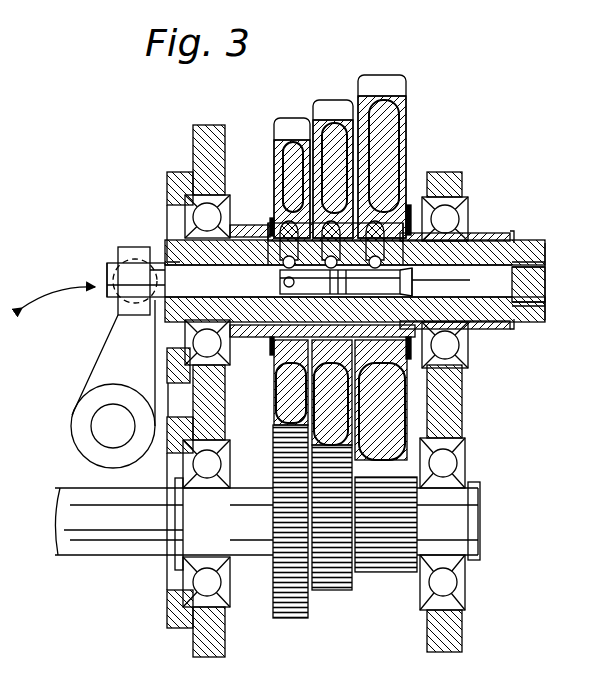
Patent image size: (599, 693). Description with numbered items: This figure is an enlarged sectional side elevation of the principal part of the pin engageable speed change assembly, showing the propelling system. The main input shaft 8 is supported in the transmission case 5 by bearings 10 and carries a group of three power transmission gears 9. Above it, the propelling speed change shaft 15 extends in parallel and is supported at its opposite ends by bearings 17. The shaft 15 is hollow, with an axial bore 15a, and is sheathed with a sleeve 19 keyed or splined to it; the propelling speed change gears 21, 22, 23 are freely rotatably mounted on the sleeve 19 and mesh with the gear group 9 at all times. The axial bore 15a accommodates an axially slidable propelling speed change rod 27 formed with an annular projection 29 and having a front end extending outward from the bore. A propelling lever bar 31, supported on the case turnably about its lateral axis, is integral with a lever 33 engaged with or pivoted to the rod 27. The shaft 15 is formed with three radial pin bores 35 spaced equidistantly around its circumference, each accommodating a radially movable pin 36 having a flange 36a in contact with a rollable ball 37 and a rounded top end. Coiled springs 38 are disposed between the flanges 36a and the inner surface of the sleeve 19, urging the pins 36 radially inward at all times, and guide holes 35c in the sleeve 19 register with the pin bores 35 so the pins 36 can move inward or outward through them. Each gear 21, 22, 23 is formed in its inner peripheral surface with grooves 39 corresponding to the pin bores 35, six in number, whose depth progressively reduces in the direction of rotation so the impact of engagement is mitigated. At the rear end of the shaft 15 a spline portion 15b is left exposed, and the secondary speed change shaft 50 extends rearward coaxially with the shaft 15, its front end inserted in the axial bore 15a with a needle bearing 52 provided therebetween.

The transmission case 5 is at (190, 640).
The main input shaft 8 is at (133, 553).
The power transmission gears 9 is at (363, 576).
The bearings 10 is at (185, 582).
The propelling speed change shaft 15 is at (488, 325).
The axial bore 15a is at (158, 262).
The spline portion 15b is at (530, 240).
The bearings 17 is at (190, 205).
The sleeve 19 is at (250, 337).
The propelling speed change gear 21 is at (385, 88).
The propelling speed change gear 22 is at (333, 105).
The propelling speed change gear 23 is at (290, 122).
The propelling speed change rod 27 is at (122, 258).
The annular projection 29 is at (380, 300).
The propelling lever bar 31 is at (95, 432).
The lever 33 is at (102, 338).
The pin bores 35 is at (282, 259).
The guide holes 35c is at (286, 232).
The pins 36 is at (283, 263).
The flange 36a is at (285, 287).
The ball 37 is at (318, 294).
The coiled springs 38 is at (342, 294).
The grooves 39 is at (274, 216).
The secondary speed change shaft 50 is at (535, 286).
The needle bearing 52 is at (540, 264).